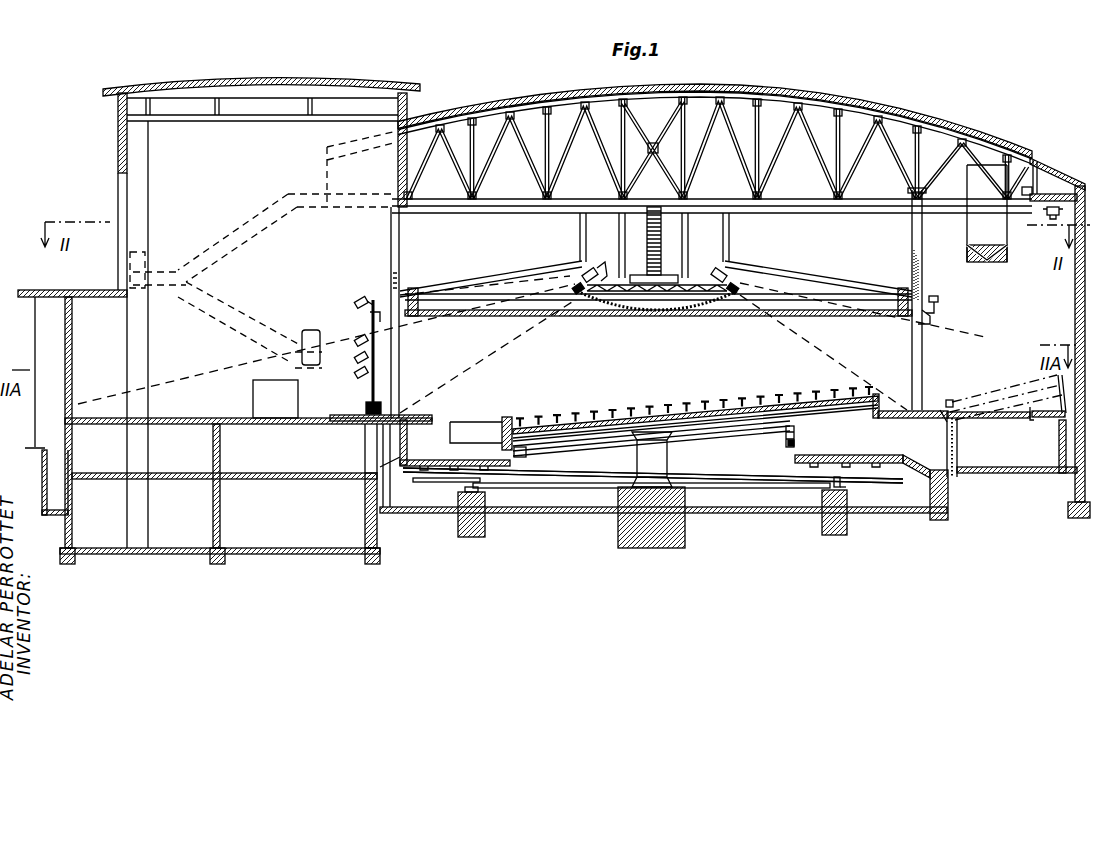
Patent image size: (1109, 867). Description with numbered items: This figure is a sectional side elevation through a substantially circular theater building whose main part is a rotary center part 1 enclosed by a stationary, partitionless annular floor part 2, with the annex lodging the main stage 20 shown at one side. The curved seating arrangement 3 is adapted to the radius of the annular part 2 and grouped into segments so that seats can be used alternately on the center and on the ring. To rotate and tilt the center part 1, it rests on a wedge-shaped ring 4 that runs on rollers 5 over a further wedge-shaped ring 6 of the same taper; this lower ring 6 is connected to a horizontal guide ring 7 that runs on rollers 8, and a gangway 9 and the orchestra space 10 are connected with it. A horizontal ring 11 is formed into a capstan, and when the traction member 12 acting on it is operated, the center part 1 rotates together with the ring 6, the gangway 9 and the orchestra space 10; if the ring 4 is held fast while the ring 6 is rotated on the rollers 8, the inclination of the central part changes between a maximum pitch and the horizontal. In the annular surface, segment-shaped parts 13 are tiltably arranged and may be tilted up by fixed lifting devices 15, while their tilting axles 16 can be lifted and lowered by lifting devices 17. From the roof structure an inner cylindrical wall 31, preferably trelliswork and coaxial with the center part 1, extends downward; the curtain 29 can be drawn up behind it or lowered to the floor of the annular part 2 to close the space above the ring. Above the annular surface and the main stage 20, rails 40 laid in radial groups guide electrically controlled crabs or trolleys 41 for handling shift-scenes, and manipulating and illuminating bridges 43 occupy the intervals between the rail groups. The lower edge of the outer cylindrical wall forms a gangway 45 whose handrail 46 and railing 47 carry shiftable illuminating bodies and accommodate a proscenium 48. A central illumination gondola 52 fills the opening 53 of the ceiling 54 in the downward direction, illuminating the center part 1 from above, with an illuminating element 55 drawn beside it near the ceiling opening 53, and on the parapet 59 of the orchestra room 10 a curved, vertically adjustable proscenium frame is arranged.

The center part 1 is at (660, 410).
The annular floor part 2 is at (922, 410).
The seating arrangement 3 is at (580, 416).
The wedge-shaped ring 4 is at (795, 434).
The rollers 5 is at (795, 444).
The wedge-shaped ring 6 is at (760, 458).
The horizontal guide ring 7 is at (810, 489).
The rollers 8 is at (848, 506).
The gangway 9 is at (856, 455).
The orchestra space 10 is at (428, 436).
The horizontal ring 11 is at (842, 481).
The traction member 12 is at (434, 482).
The segment-shaped parts 13 is at (1020, 398).
The fixed lifting devices 15 is at (1059, 446).
The tilting axles 16 is at (949, 400).
The lifting devices 17 is at (958, 446).
The main stage 20 is at (324, 420).
The curtain 29 is at (398, 332).
The inner cylindrical wall 31 is at (912, 236).
The rails 40 is at (1052, 206).
The crabs or trolleys 41 is at (1052, 220).
The manipulating and illuminating bridges 43 is at (990, 255).
The gangway 45 is at (928, 320).
The handrail 46 is at (370, 297).
The railing 47 is at (940, 300).
The proscenium 48 is at (372, 388).
The central illumination gondola 52 is at (637, 311).
The opening 53 is at (722, 262).
The ceiling 54 is at (776, 267).
The spotlight 55 is at (627, 275).
The parapet 59 is at (504, 422).